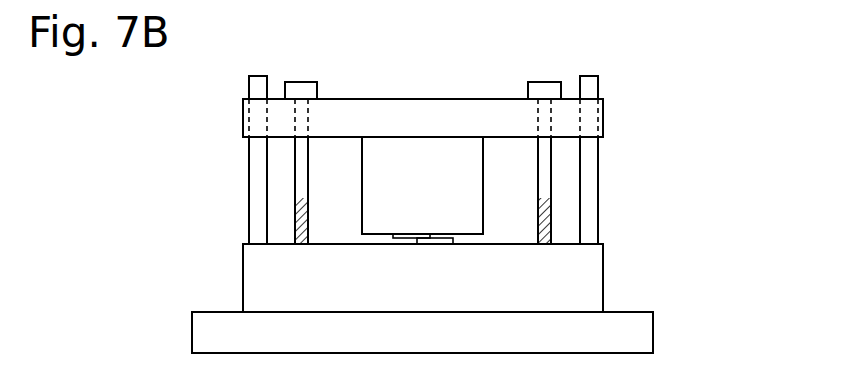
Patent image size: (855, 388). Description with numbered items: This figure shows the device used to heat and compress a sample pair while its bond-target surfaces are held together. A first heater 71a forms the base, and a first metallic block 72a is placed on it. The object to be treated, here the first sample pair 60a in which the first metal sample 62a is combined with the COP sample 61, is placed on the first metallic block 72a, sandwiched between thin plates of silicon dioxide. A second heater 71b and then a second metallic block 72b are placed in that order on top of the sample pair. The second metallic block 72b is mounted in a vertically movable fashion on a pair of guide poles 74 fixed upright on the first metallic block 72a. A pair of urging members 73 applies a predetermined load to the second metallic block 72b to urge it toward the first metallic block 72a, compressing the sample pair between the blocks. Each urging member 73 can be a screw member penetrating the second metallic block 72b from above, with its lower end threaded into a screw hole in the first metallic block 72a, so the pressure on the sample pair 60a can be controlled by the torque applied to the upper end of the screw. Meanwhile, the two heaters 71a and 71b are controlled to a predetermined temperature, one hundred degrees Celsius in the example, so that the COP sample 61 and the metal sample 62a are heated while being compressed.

The first heater 71a is at (653, 330).
The first metallic block 72a is at (603, 275).
The second metallic block 72b is at (603, 118).
The guide poles 74 is at (249, 185).
The urging members 73 is at (301, 82).
The second heater 71b is at (485, 180).
The first metal sample 62a is at (392, 238).
The COP sample 61 is at (453, 245).
The first sample pair 60a is at (381, 252).